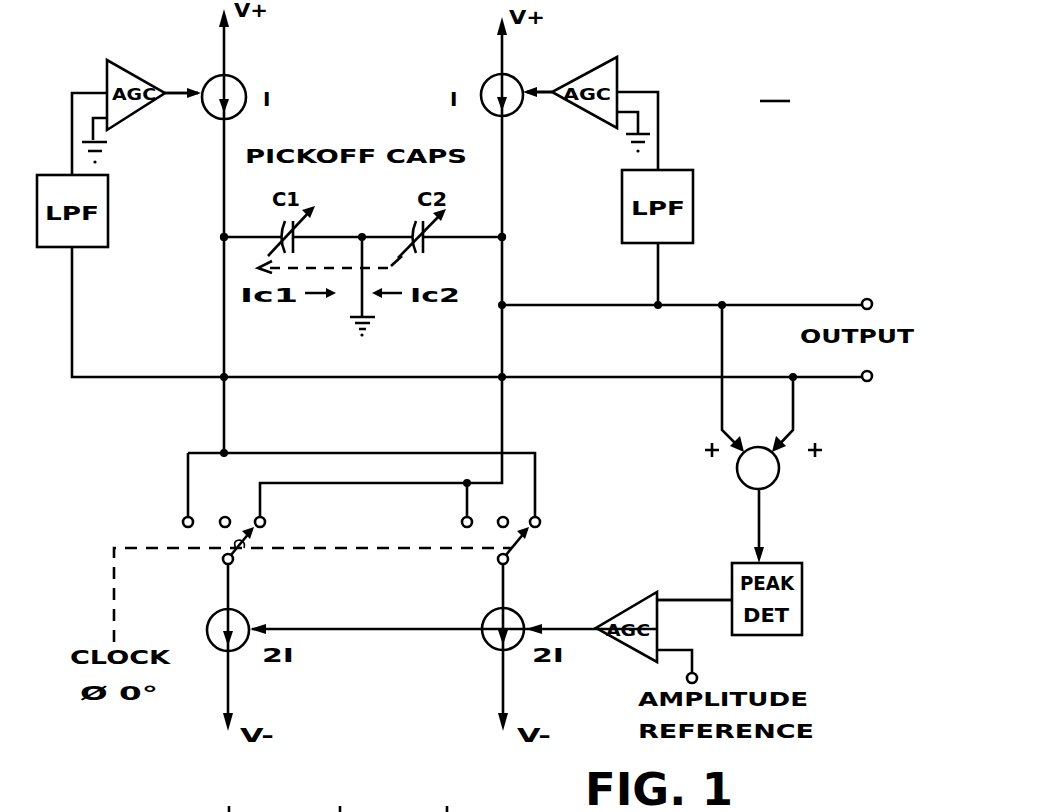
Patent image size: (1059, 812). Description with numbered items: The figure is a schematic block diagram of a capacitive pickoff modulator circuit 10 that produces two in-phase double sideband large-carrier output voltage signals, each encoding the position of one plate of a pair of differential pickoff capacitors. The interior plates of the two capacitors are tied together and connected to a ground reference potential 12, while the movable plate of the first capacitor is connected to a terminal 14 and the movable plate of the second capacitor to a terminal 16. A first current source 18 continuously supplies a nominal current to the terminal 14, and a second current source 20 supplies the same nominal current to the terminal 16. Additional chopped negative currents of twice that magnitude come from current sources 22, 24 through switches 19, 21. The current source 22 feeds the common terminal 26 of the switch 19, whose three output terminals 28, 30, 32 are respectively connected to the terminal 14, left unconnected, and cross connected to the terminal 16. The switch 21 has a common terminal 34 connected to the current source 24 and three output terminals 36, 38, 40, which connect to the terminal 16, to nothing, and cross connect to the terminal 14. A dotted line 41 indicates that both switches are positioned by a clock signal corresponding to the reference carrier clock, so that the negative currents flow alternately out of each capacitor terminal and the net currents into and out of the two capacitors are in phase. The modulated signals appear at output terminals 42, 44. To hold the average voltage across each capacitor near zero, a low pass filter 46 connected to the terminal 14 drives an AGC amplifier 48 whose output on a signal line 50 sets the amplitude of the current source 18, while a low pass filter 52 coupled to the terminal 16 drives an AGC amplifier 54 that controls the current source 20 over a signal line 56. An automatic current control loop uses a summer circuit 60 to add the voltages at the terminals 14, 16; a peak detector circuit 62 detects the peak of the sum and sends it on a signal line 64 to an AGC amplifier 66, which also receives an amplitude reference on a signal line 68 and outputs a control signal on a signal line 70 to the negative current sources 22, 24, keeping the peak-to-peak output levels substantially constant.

The capacitive pickoff modulator circuit 10 is at (775, 89).
The ground reference potential 12 is at (378, 319).
The terminal 14 is at (222, 240).
The terminal 16 is at (505, 240).
The first current source 18 is at (240, 80).
The switch 19 is at (222, 554).
The second current source 20 is at (484, 76).
The switch 21 is at (520, 551).
The current source 22 is at (238, 655).
The current source 24 is at (483, 638).
The common terminal 26 is at (233, 562).
The output terminal 28 is at (184, 518).
The output terminal 30 is at (226, 517).
The output terminal 32 is at (266, 518).
The common terminal 34 is at (498, 560).
The output terminal 36 is at (462, 522).
The output terminal 38 is at (510, 516).
The output terminal 40 is at (545, 522).
The dotted line 41 is at (112, 583).
The output terminal 42 is at (865, 381).
The output terminal 44 is at (862, 298).
The low pass filter 46 is at (108, 207).
The AGC amplifier 48 is at (107, 70).
The signal line 50 is at (177, 90).
The low pass filter 52 is at (693, 197).
The AGC amplifier 54 is at (625, 67).
The signal line 56 is at (550, 97).
The summer circuit 60 is at (779, 473).
The peak detector circuit 62 is at (805, 592).
The signal line 64 is at (698, 600).
The AGC amplifier 66 is at (648, 598).
The signal line 68 is at (698, 676).
The signal line 70 is at (592, 626).